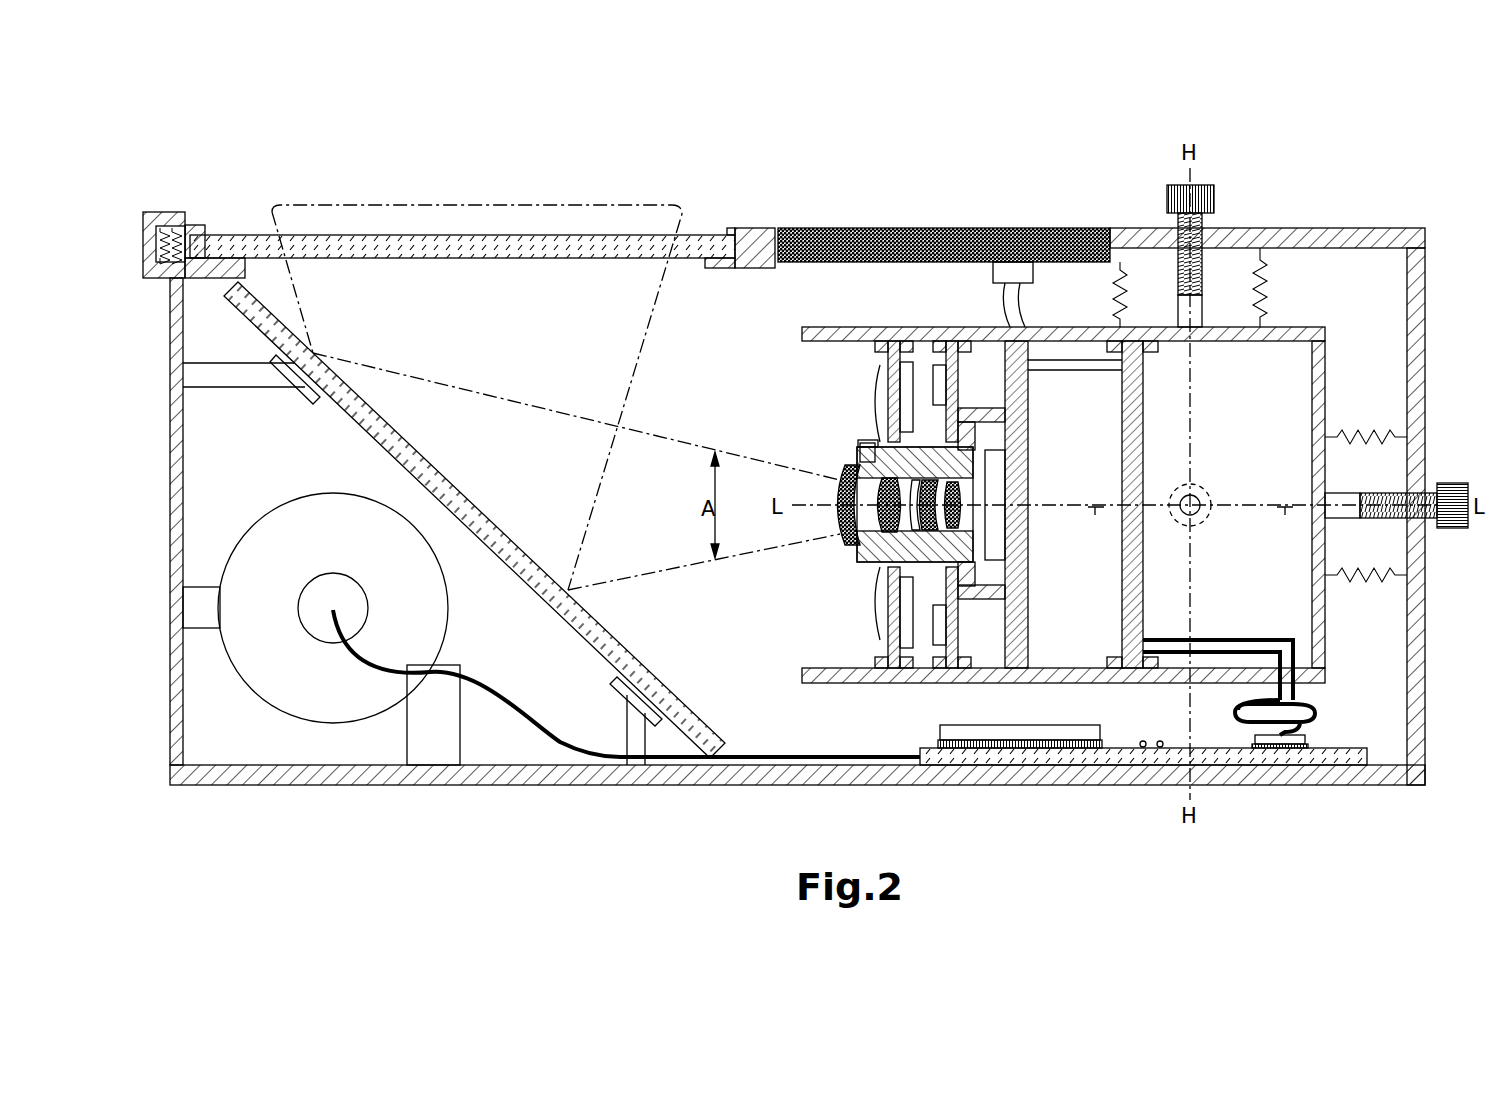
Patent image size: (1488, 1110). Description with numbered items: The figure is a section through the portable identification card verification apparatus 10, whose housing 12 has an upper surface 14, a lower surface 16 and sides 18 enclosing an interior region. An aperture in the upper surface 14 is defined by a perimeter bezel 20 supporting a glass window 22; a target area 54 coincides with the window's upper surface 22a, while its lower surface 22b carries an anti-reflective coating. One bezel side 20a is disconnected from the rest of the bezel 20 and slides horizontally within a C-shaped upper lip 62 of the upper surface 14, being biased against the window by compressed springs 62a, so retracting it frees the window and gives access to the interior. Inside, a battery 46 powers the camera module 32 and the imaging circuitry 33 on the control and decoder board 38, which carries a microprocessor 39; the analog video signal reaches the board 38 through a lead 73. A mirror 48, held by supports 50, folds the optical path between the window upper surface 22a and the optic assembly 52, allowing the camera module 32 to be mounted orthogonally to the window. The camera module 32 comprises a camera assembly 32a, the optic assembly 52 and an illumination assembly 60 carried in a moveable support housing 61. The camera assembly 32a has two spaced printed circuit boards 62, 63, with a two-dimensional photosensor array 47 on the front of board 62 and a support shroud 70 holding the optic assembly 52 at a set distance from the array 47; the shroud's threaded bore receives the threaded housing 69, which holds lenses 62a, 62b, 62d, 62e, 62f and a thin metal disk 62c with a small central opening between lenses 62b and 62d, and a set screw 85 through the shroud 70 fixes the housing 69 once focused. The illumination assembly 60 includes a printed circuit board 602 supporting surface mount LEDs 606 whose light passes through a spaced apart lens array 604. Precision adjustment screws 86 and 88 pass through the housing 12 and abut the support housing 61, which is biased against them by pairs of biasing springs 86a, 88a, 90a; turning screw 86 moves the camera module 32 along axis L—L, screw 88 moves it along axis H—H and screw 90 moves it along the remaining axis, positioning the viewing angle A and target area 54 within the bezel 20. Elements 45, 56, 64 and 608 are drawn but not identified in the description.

The portable ID verification apparatus 10 is at (1403, 128).
The housing 12 is at (1410, 167).
The upper surface 14 is at (1398, 228).
The lower surface 16 is at (265, 786).
The sides 18 is at (175, 562).
The perimeter bezel 20 is at (730, 228).
The bezel side 20a is at (200, 225).
The glass window 22 is at (528, 258).
The upper surface of glass window 22a is at (482, 235).
The lower surface of glass window 22b is at (570, 258).
The camera module 32 is at (912, 228).
The camera assembly 32a is at (1212, 437).
The imaging circuitry 33 is at (925, 735).
The control and decoder board 38 is at (1168, 748).
The microprocessor 39 is at (975, 765).
The frame member 45 is at (1082, 372).
The battery 46 is at (350, 740).
The two-dimensional photosensor array 47 is at (1000, 490).
The mirror 48 is at (510, 568).
The supports 50 is at (230, 380).
The optic assembly 52 is at (790, 478).
The target area 54 is at (482, 175).
The light rays 56 is at (520, 410).
The illumination assembly 60 is at (805, 356).
The moveable support housing 61 is at (1325, 605).
The printed circuit board 62 is at (168, 212).
The lens 62a is at (172, 268).
The lens 62b is at (880, 535).
The thin metal disk 62c is at (912, 540).
The lens 62d is at (935, 500).
The lens 62e is at (955, 535).
The lens 62f is at (985, 590).
The printed circuit board 63 is at (1138, 430).
The flexible cable 64 is at (1208, 652).
The housing of optic assembly 69 is at (845, 470).
The support shroud 70 is at (892, 540).
The lead 73 is at (1320, 704).
The set screw 85 is at (858, 443).
The precision adjustment screw 86 is at (1440, 483).
The biasing springs 86a is at (1358, 432).
The precision adjustment screw 88 is at (1205, 208).
The biasing springs 88a is at (1268, 270).
The precision adjustment screw 90 is at (1185, 518).
The biasing springs 90a is at (1095, 515).
The printed circuit board 602 is at (948, 370).
The lens array 604 is at (888, 358).
The surface mount LEDs 606 is at (906, 362).
The spring member 608 is at (880, 400).